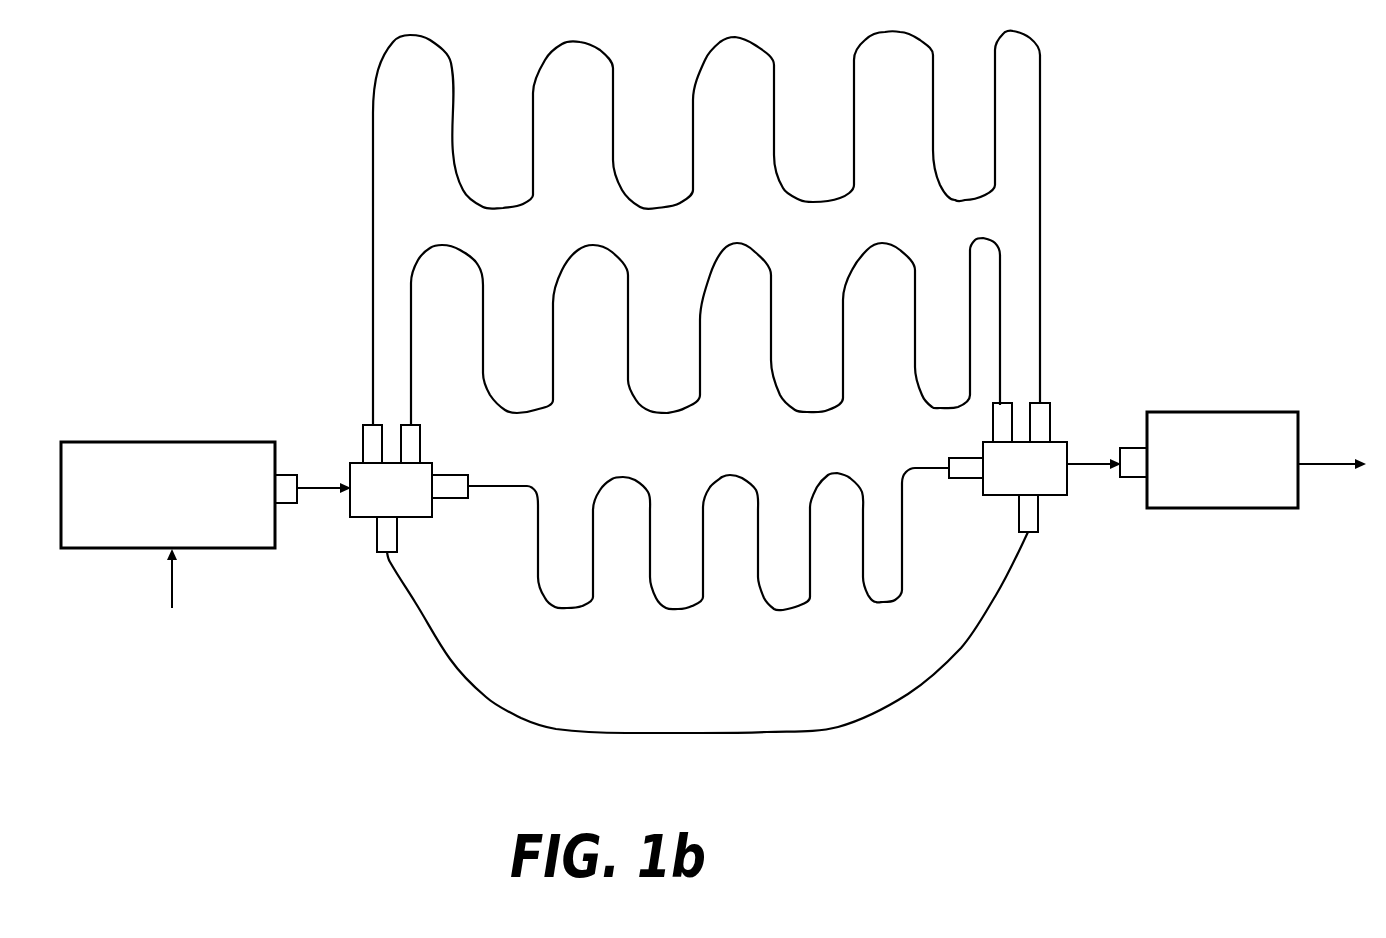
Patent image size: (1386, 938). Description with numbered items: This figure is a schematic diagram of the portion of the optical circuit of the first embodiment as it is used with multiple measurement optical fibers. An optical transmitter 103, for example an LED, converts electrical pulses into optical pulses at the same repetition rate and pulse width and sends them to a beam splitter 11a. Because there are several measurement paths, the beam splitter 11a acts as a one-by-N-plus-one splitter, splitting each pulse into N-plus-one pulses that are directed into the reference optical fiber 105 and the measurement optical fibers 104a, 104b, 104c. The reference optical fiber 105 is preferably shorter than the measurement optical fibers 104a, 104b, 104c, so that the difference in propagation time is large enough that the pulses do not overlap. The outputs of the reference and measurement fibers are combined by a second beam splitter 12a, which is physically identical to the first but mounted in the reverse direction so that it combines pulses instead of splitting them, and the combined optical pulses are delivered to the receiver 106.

The optical transmitter 103 is at (100, 441).
The beam splitter 11a is at (350, 463).
The beam splitter 12a is at (1060, 441).
The receiver 106 is at (1177, 412).
The measurement optical fiber 104a is at (681, 611).
The measurement optical fiber 104b is at (710, 262).
The measurement optical fiber 104c is at (830, 20).
The reference optical fiber 105 is at (767, 731).